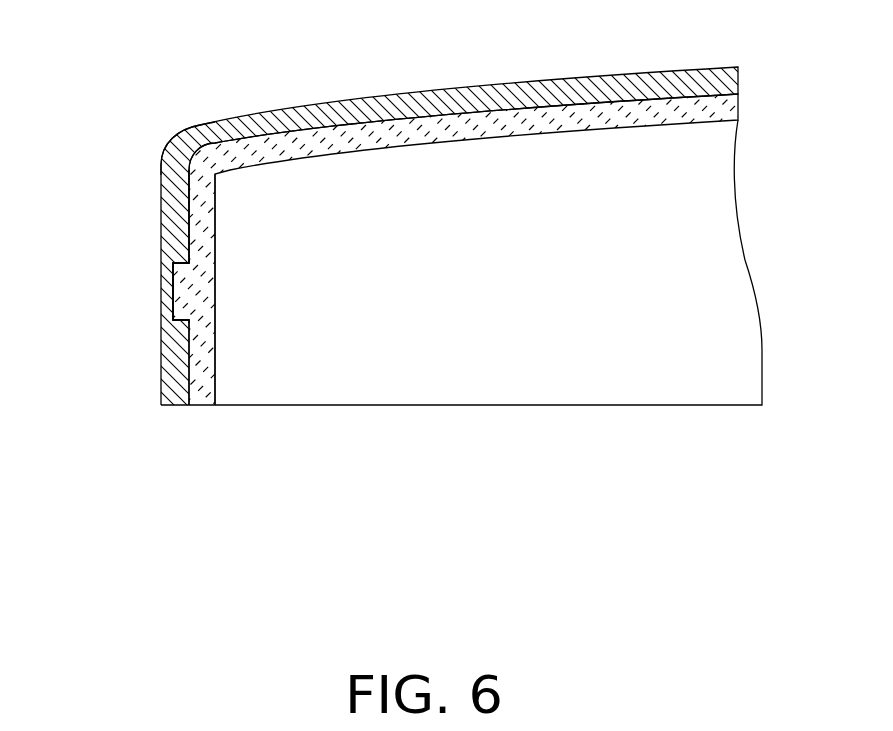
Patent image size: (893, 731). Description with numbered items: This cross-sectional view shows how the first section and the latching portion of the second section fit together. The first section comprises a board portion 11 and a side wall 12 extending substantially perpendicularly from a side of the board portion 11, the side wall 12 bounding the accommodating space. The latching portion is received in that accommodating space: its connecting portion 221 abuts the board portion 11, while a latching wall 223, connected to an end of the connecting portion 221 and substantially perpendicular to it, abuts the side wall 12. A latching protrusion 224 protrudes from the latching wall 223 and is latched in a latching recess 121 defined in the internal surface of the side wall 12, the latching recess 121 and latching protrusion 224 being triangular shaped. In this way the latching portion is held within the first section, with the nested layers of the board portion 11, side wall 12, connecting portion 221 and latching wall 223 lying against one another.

The board portion 11 is at (520, 90).
The side wall 12 is at (172, 178).
The latching recess 121 is at (190, 257).
The connecting portion 221 is at (587, 112).
The latching wall 223 is at (205, 205).
The latching protrusion 224 is at (178, 271).